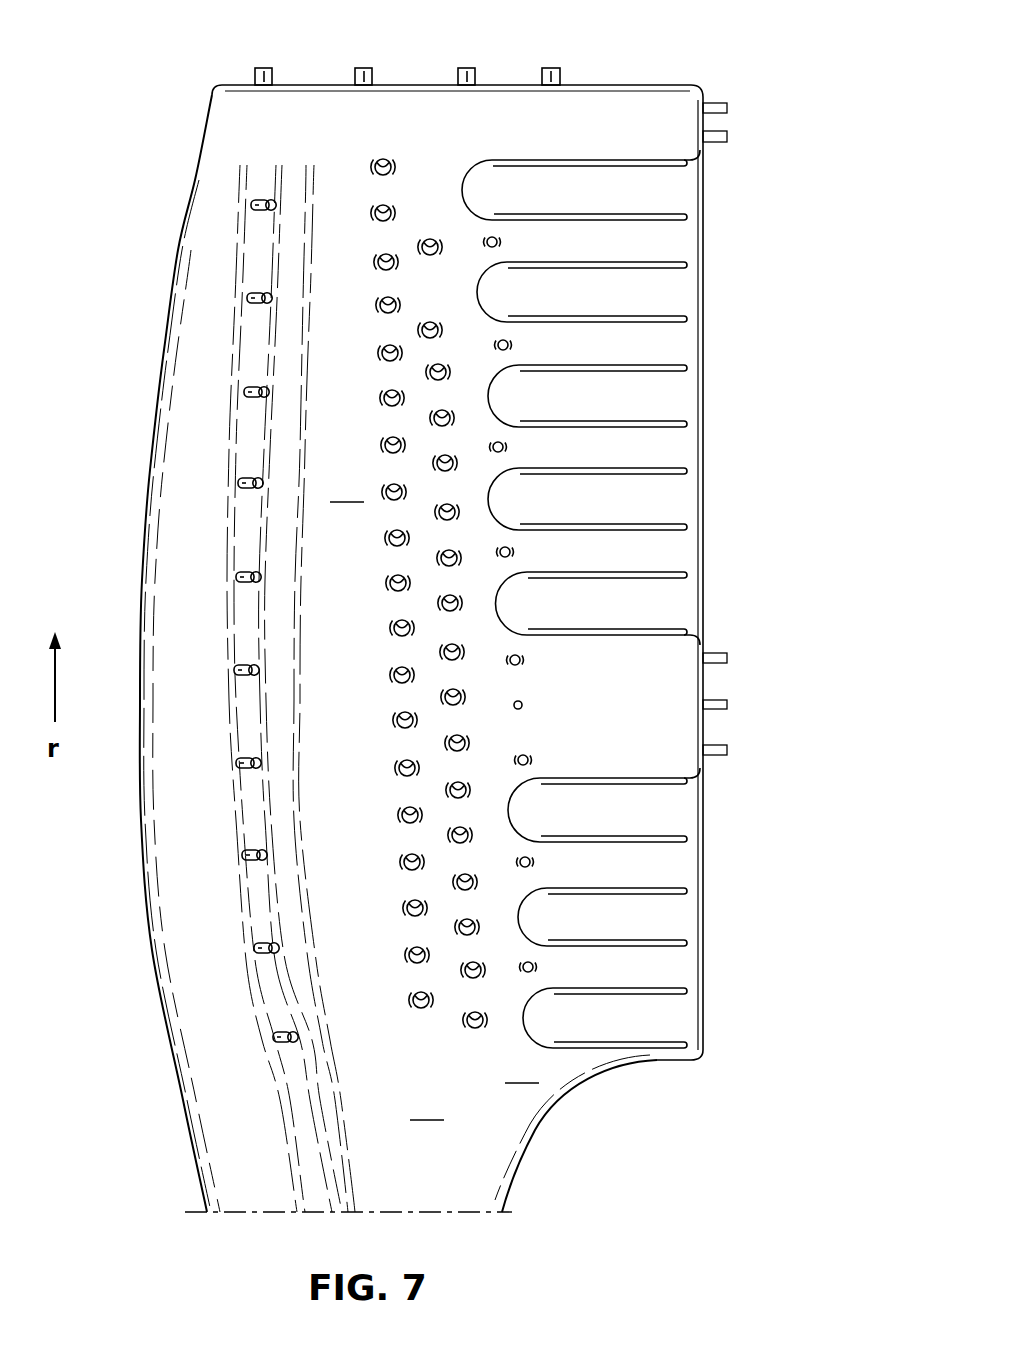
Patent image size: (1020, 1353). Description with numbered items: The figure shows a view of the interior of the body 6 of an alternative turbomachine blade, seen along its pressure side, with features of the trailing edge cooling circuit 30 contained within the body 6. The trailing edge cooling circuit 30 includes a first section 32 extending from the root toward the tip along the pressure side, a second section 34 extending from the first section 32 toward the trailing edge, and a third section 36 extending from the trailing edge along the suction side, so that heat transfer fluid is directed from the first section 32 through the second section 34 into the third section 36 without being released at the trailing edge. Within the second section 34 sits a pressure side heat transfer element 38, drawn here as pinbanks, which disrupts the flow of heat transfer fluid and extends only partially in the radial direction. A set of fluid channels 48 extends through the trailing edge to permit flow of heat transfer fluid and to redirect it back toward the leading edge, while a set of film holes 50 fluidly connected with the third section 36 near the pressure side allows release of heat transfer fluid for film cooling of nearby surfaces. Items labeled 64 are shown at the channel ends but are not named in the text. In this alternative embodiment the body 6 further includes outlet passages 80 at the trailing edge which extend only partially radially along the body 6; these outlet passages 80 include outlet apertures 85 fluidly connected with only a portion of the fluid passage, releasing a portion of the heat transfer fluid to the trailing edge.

The body 6 is at (455, 606).
The trailing edge cooling circuit 30 is at (460, 606).
The first section 32 is at (387, 798).
The second section 34 is at (522, 1070).
The third section 36 is at (217, 688).
The pressure side heat transfer element 38 is at (313, 527).
The fluid channels 48 is at (612, 604).
The film holes 50 is at (324, 521).
The slot inlet ends 64 is at (306, 589).
The outlet passages 80 is at (666, 407).
The outlet apertures 85 is at (758, 429).